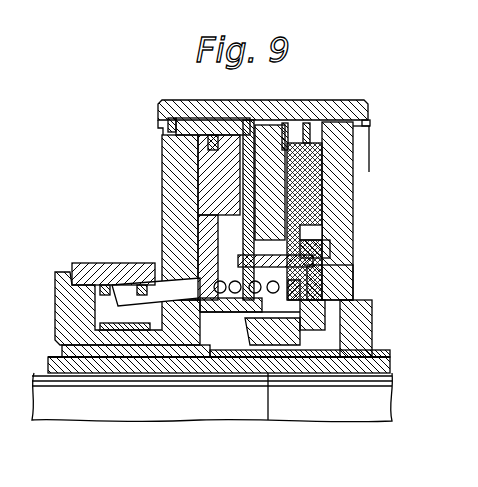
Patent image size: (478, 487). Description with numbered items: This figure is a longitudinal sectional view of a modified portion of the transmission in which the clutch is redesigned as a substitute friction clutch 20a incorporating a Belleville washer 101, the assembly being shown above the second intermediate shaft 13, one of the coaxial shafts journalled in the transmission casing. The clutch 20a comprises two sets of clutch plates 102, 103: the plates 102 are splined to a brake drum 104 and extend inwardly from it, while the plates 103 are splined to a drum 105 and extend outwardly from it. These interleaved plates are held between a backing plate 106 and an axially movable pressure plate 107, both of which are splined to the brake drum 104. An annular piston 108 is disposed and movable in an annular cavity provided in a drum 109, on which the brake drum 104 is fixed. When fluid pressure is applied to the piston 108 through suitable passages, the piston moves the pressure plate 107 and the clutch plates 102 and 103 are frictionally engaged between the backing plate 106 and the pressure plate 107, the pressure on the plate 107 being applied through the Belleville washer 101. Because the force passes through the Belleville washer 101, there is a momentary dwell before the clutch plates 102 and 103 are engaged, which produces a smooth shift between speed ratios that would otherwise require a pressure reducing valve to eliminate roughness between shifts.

The second intermediate shaft 13 is at (224, 419).
The substitute friction clutch 20a is at (318, 97).
The Belleville washer 101 is at (254, 122).
The clutch plates 102 is at (335, 140).
The clutch plates 103 is at (332, 238).
The brake drum 104 is at (362, 112).
The drum 105 is at (327, 248).
The backing plate 106 is at (348, 183).
The pressure plate 107 is at (262, 120).
The annular piston 108 is at (215, 170).
The drum 109 is at (178, 216).